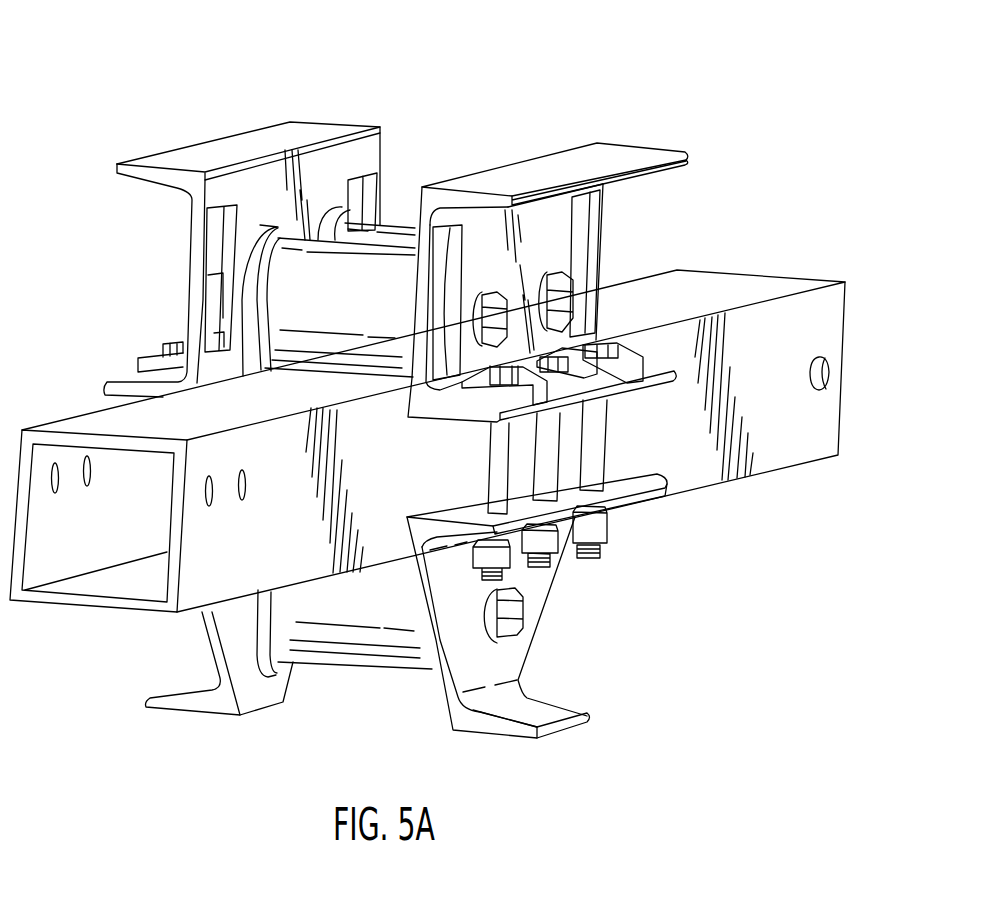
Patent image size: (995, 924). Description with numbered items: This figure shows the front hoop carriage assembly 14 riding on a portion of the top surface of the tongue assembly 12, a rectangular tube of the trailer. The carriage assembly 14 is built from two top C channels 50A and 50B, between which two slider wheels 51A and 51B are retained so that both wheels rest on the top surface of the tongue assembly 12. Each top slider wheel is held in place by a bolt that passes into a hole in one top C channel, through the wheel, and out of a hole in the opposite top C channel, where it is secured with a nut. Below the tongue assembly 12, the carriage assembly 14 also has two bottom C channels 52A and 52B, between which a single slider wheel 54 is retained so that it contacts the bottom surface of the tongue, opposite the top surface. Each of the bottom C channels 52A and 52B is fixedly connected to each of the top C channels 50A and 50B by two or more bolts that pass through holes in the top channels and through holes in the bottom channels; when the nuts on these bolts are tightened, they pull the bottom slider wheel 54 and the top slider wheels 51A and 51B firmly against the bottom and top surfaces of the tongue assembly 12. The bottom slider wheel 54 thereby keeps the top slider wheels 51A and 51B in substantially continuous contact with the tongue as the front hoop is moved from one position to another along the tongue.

The front hoop carriage assembly 14 is at (136, 36).
The tongue assembly 12 is at (822, 322).
The top C channel 50A is at (623, 152).
The top C channel 50B is at (313, 135).
The slider wheel 51A is at (390, 238).
The slider wheel 51B is at (318, 277).
The bottom C channel 52A is at (503, 652).
The bottom C channel 52B is at (238, 637).
The slider wheel 54 is at (368, 637).